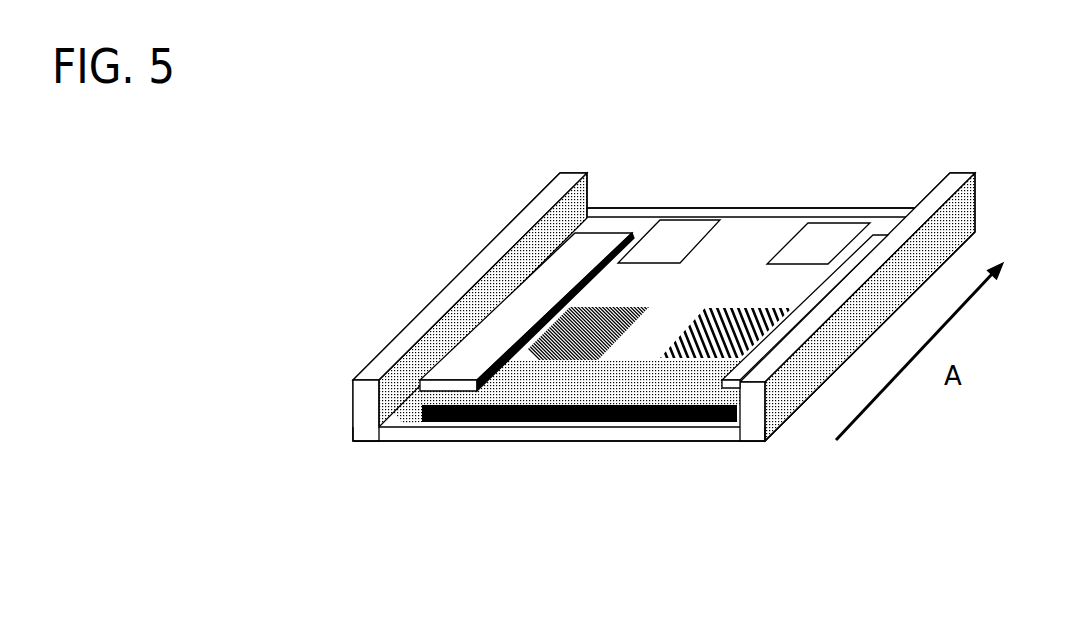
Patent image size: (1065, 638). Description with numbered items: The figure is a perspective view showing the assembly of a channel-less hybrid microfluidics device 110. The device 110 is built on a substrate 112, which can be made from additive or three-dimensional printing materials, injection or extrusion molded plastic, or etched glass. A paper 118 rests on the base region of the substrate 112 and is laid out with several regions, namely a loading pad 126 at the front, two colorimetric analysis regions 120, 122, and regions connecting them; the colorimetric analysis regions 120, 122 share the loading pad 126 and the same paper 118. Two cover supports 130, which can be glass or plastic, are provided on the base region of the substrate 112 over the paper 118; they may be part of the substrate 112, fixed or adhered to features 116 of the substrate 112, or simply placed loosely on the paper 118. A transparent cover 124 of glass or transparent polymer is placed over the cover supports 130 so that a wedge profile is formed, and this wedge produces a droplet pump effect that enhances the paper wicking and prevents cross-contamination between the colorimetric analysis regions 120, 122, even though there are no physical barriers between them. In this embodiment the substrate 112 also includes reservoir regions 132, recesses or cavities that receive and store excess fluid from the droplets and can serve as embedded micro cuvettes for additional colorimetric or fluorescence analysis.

The channel-less hybrid microfluidics device 110 is at (167, 228).
The substrate 112 is at (567, 437).
The features of the substrate 116 is at (475, 273).
The paper 118 is at (410, 412).
The colorimetric analysis region 120 is at (741, 362).
The colorimetric analysis region 122 is at (560, 338).
The transparent cover 124 is at (868, 208).
The loading pad 126 is at (473, 417).
The cover supports 130 is at (532, 307).
The reservoir regions 132 is at (672, 235).